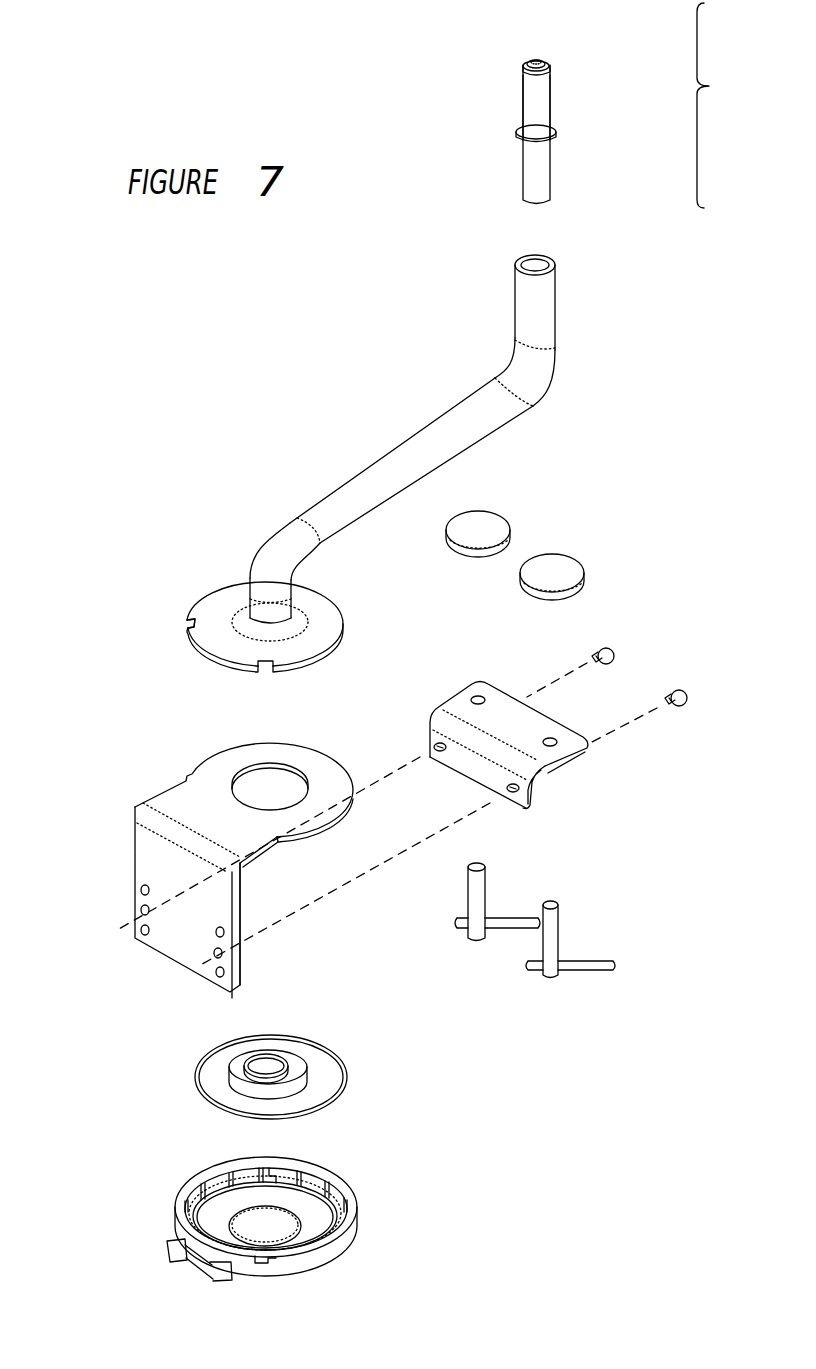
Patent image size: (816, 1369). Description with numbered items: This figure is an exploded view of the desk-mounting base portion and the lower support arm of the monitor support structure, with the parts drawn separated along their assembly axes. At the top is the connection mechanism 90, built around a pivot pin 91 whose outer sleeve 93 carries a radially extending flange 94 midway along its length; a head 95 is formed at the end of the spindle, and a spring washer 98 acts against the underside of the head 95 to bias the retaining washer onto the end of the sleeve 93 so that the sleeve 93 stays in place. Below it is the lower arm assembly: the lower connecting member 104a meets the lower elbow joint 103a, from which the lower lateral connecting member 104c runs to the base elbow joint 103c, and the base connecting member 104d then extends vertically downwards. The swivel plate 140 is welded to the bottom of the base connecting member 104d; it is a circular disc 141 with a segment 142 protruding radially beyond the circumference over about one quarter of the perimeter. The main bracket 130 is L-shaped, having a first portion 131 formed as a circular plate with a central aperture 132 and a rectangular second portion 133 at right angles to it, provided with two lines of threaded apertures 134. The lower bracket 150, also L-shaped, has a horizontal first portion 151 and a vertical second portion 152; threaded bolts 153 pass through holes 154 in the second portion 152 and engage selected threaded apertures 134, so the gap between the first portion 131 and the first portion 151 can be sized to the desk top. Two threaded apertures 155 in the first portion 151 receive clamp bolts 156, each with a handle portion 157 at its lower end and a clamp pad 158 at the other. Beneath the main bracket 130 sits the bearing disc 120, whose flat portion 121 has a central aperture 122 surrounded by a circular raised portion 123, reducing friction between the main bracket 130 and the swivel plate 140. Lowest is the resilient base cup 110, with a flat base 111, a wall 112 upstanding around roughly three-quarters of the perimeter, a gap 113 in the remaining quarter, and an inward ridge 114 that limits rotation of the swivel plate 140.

The connection mechanism 90 is at (721, 105).
The pivot pin 91 is at (564, 178).
The outer sleeve 93 is at (540, 102).
The flange 94 is at (556, 130).
The head 95 is at (528, 62).
The spring washer 98 is at (552, 66).
The lower elbow joint 103a is at (543, 372).
The base elbow joint 103c is at (292, 534).
The lower connecting member 104a is at (545, 298).
The lower lateral connecting member 104c is at (416, 447).
The base connecting member 104d is at (268, 610).
The base cup 110 is at (233, 1216).
The flat base 111 is at (213, 1215).
The wall 112 is at (340, 1242).
The gap 113 is at (262, 1263).
The ridge 114 is at (300, 1186).
The bearing disc 120 is at (262, 1063).
The flat portion 121 is at (213, 1090).
The central aperture 122 is at (270, 1065).
The circular raised portion 123 is at (298, 1075).
The main bracket 130 is at (204, 849).
The first portion 131 is at (205, 770).
The central aperture 132 is at (272, 786).
The second portion 133 is at (140, 855).
The threaded apertures 134 is at (140, 930).
The swivel plate 140 is at (267, 599).
The circular disc 141 is at (335, 625).
The segment 142 is at (200, 643).
The lower bracket 150 is at (502, 751).
The first portion 151 is at (512, 704).
The second portion 152 is at (532, 797).
The threaded bolts 153 is at (614, 660).
The holes 154 is at (434, 747).
The threaded apertures 155 is at (478, 695).
The clamp bolts 156 is at (480, 885).
The handle portion 157 is at (508, 925).
The clamp pad 158 is at (495, 522).